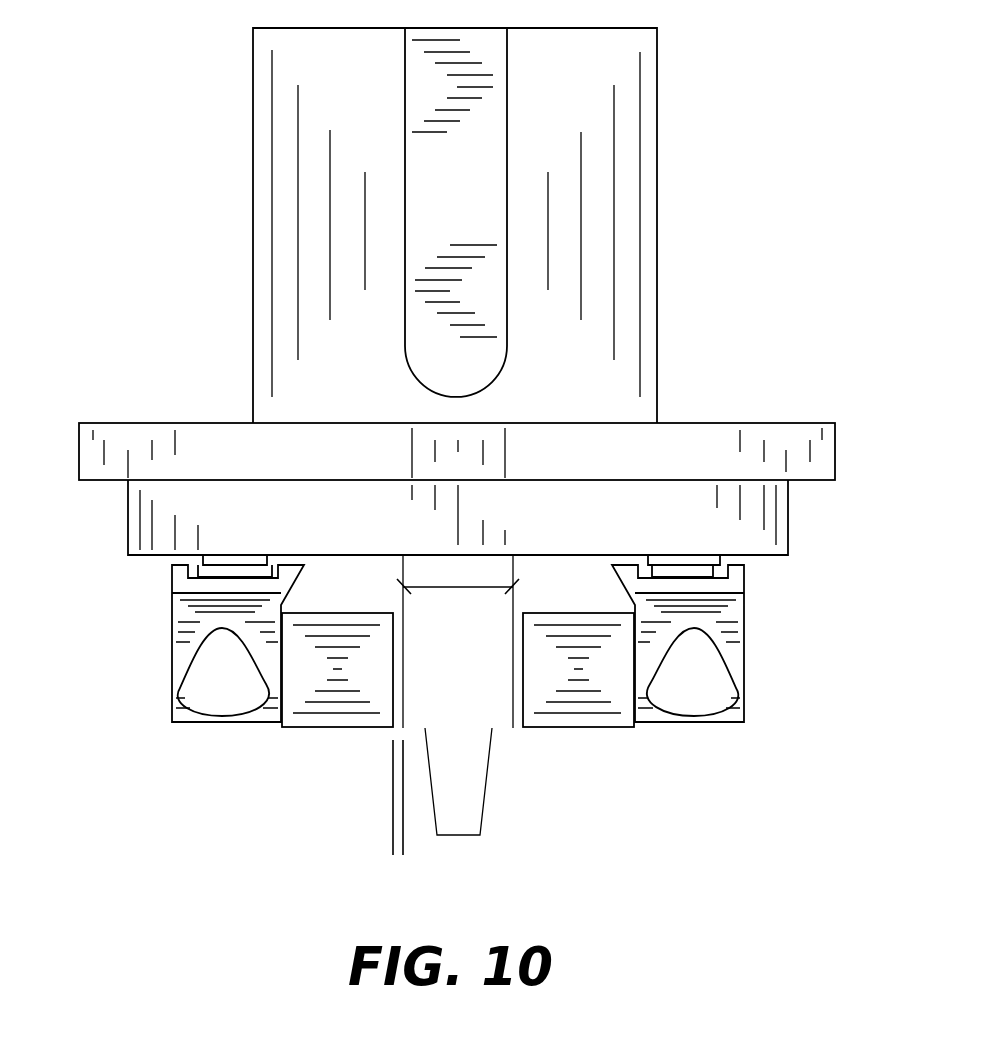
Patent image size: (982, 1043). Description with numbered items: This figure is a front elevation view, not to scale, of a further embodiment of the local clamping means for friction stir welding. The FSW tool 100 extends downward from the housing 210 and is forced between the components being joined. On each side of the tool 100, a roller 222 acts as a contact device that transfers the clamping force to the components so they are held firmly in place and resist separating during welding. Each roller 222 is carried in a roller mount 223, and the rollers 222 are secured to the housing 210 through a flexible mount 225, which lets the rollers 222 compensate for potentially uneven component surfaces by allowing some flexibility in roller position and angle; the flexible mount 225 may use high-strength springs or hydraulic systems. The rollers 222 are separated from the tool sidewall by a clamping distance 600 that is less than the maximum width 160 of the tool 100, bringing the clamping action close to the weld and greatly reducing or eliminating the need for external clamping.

The housing 210 is at (205, 423).
The flexible mount 225 is at (203, 560).
The maximum width of the tool 160 is at (458, 587).
The roller mount 223 is at (200, 722).
The roller 222 is at (350, 728).
The FSW tool 100 is at (450, 728).
The clamping distance 600 is at (435, 847).